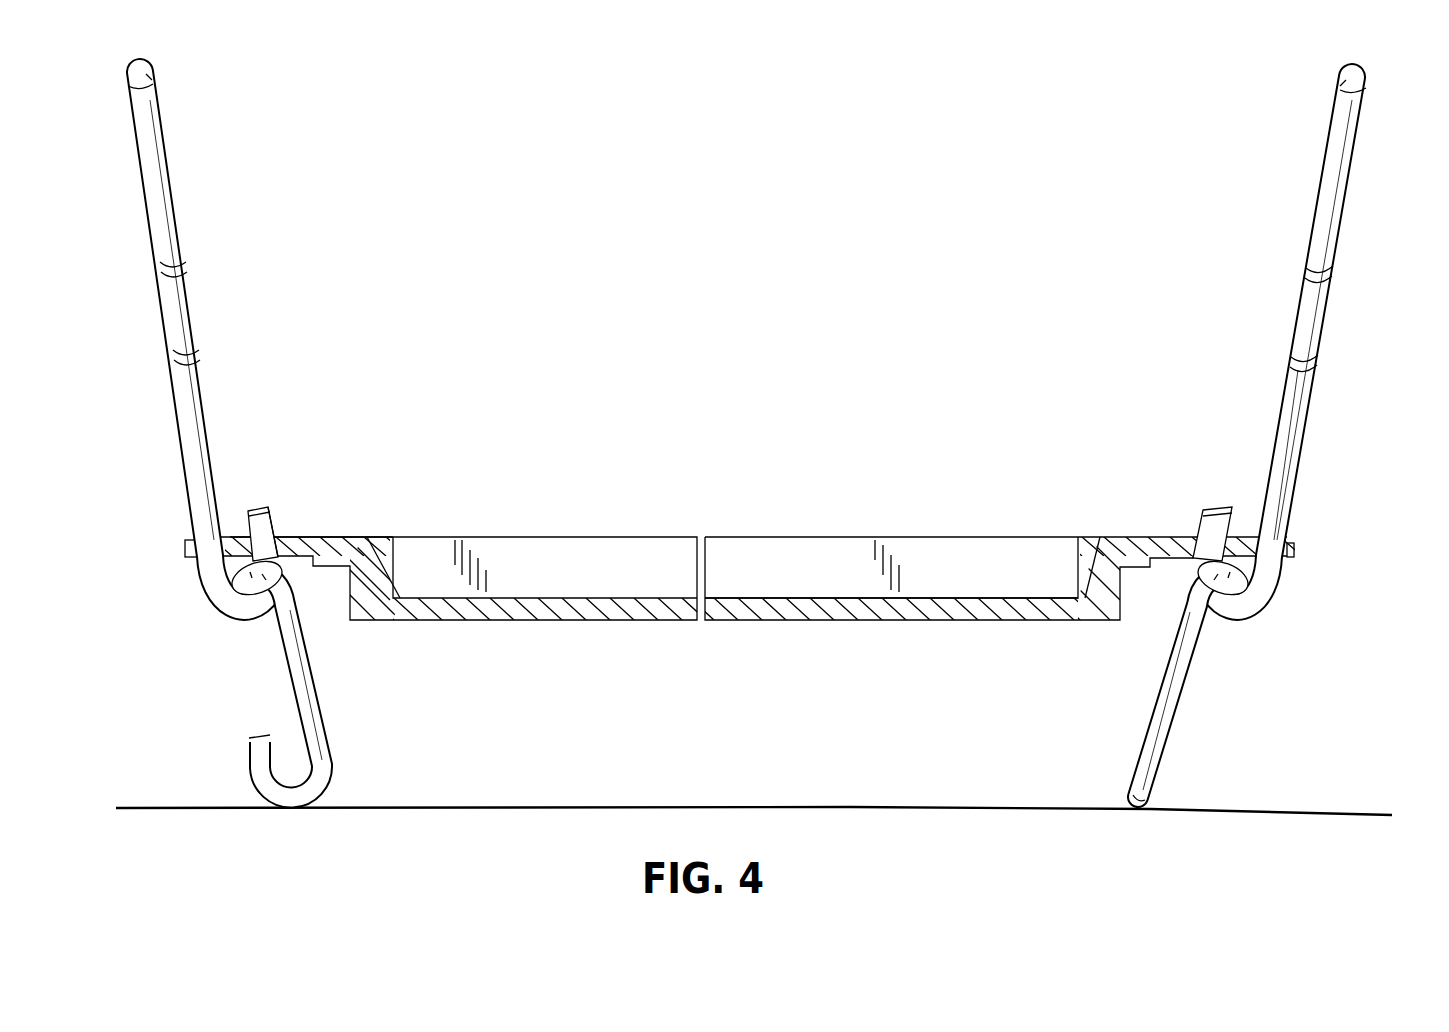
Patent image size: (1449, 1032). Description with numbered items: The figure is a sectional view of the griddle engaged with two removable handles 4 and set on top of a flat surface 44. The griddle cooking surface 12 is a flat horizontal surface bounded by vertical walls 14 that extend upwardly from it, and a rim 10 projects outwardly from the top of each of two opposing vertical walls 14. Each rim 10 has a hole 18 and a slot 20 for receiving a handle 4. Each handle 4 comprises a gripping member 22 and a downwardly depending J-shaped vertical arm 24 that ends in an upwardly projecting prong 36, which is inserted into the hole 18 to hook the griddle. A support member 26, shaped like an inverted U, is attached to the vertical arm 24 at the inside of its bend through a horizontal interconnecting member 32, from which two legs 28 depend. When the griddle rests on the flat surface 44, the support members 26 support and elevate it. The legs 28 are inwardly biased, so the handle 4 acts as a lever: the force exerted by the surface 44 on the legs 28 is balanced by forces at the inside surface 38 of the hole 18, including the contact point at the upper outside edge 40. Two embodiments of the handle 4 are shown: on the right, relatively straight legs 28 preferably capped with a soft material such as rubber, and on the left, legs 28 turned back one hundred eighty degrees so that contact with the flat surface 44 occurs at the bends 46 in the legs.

The removable handle 4 is at (203, 265).
The rim 10 is at (345, 540).
The griddle cooking surface 12 is at (802, 593).
The vertical wall 14 is at (397, 562).
The hole 18 is at (280, 528).
The slot 20 is at (182, 536).
The gripping member 22 is at (168, 200).
The J-shaped vertical arm 24 is at (1282, 360).
The support member 26 is at (1210, 668).
The leg 28 is at (1177, 722).
The interconnecting member 32 is at (1265, 600).
The prong 36 is at (282, 530).
The inside surface of the hole 38 is at (1207, 507).
The upper outside edge contact point 40 is at (255, 507).
The flat surface 44 is at (666, 805).
The bend 46 is at (335, 796).